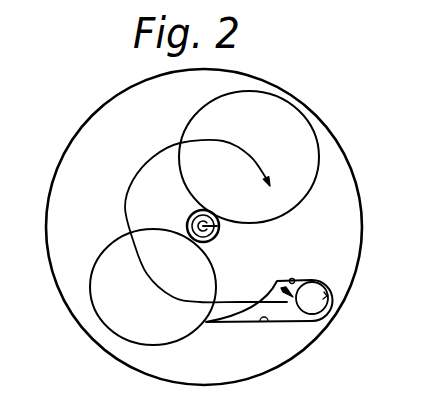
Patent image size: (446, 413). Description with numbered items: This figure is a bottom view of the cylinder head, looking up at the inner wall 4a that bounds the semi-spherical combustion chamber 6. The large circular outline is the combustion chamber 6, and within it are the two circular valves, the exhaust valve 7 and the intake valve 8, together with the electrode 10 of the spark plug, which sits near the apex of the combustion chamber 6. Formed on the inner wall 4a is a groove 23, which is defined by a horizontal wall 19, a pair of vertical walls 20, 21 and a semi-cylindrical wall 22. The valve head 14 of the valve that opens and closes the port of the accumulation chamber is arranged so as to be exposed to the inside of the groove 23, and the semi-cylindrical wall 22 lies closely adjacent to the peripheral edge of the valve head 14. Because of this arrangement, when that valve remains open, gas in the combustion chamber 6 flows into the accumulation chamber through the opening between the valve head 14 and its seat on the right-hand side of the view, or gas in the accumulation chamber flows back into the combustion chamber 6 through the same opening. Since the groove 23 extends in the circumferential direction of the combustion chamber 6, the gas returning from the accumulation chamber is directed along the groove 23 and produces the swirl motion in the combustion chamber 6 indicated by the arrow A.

The combustion chamber 6 is at (55, 221).
The exhaust valve 7 is at (120, 304).
The intake valve 8 is at (293, 133).
The electrode of the spark plug 10 is at (200, 207).
The arrow A is at (163, 148).
The inner wall of the cylinder head 4a is at (272, 301).
The horizontal wall 19 is at (283, 305).
The valve head 14 is at (318, 305).
The vertical wall 20 is at (267, 325).
The vertical wall 21 is at (292, 279).
The semi-cylindrical wall 22 is at (330, 292).
The groove 23 is at (280, 283).